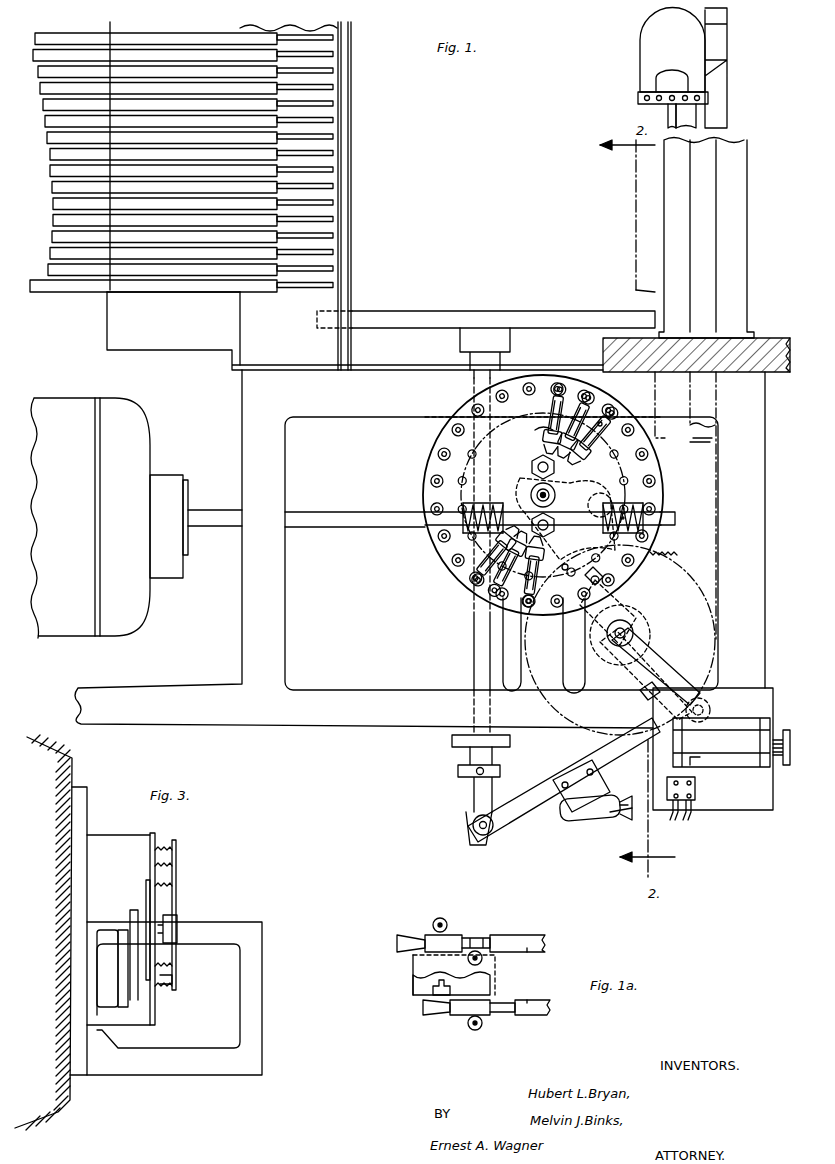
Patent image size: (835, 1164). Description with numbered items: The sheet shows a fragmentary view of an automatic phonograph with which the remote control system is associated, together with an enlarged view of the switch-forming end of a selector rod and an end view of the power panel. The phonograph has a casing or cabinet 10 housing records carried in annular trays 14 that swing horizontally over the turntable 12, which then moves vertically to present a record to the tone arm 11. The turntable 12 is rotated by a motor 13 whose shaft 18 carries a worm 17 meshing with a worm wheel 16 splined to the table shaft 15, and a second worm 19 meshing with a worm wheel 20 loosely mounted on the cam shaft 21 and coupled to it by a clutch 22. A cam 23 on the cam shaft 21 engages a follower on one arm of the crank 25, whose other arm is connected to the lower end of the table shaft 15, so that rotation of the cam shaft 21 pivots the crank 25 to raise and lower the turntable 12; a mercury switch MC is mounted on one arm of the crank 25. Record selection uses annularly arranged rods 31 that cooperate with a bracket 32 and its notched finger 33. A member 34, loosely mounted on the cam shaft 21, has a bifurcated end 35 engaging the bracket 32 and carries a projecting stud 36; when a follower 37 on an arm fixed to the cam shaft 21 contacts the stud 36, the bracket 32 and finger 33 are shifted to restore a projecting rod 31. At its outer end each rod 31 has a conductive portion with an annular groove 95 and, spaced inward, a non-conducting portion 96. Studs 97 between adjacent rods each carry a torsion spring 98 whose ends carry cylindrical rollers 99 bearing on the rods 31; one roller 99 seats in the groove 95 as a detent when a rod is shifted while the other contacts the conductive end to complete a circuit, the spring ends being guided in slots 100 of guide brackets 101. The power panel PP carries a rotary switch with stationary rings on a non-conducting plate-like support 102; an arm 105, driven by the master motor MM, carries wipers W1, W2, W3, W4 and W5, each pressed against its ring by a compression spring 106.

In FIG. 1, the annular trays 14 is at (166, 62).
In FIG. 1, the tone arm 11 is at (640, 23).
In FIG. 1, the turntable 12 is at (574, 308).
In FIG. 1, the motor 13 is at (146, 430).
In FIG. 1, the motor shaft 18 is at (324, 512).
In FIG. 1, the table shaft 15 is at (472, 632).
In FIG. 1, the worm wheel 16 is at (425, 478).
In FIG. 1, the worm 17 is at (452, 545).
In FIG. 1, the second worm 19 is at (644, 510).
In FIG. 1, the bifurcated end 35 is at (526, 496).
In FIG. 1, the bracket 32 is at (565, 511).
In FIG. 1, the finger 33 is at (598, 498).
In FIG. 1, the cylindrical rollers 99 is at (546, 438).
In FIG. 1A, the cylindrical rollers 99 is at (447, 922).
In FIG. 1, the studs 97 is at (555, 385).
In FIG. 1, the torsion spring 98 is at (605, 420).
In FIG. 1A, the torsion spring 98 is at (468, 1026).
In FIG. 1, the guide brackets 101 is at (610, 434).
In FIG. 1, the projecting stud 36 is at (556, 578).
In FIG. 1, the member 34 is at (612, 590).
In FIG. 1, the worm wheel 20 is at (665, 560).
In FIG. 1, the cam shaft 21 is at (614, 648).
In FIG. 1, the cam 23 is at (590, 622).
In FIG. 1, the clutch 22 is at (650, 610).
In FIG. 1, the follower 37 is at (640, 700).
In FIG. 1, the crank 25 is at (598, 745).
In FIG. 1, the mercury switch MC is at (590, 812).
In FIG. 3, the casing or cabinet 10 is at (66, 1098).
In FIG. 3, the power panel PP is at (88, 790).
In FIG. 3, the master motor MM is at (106, 928).
In FIG. 3, the plate-like support 102 is at (152, 1015).
In FIG. 3, the arm 105 is at (175, 890).
In FIG. 3, the wiper W5 is at (169, 844).
In FIG. 3, the wiper W4 is at (169, 865).
In FIG. 3, the wiper W2 is at (169, 886).
In FIG. 3, the wiper W1 is at (163, 965).
In FIG. 3, the compression spring 106 is at (170, 980).
In FIG. 3, the wiper W3 is at (160, 990).
In FIG. 1A, the annular groove 95 is at (410, 935).
In FIG. 1A, the non-conducting portion 96 is at (476, 935).
In FIG. 1A, the slots 100 is at (413, 982).
In FIG. 1A, the rods 31 is at (530, 952).